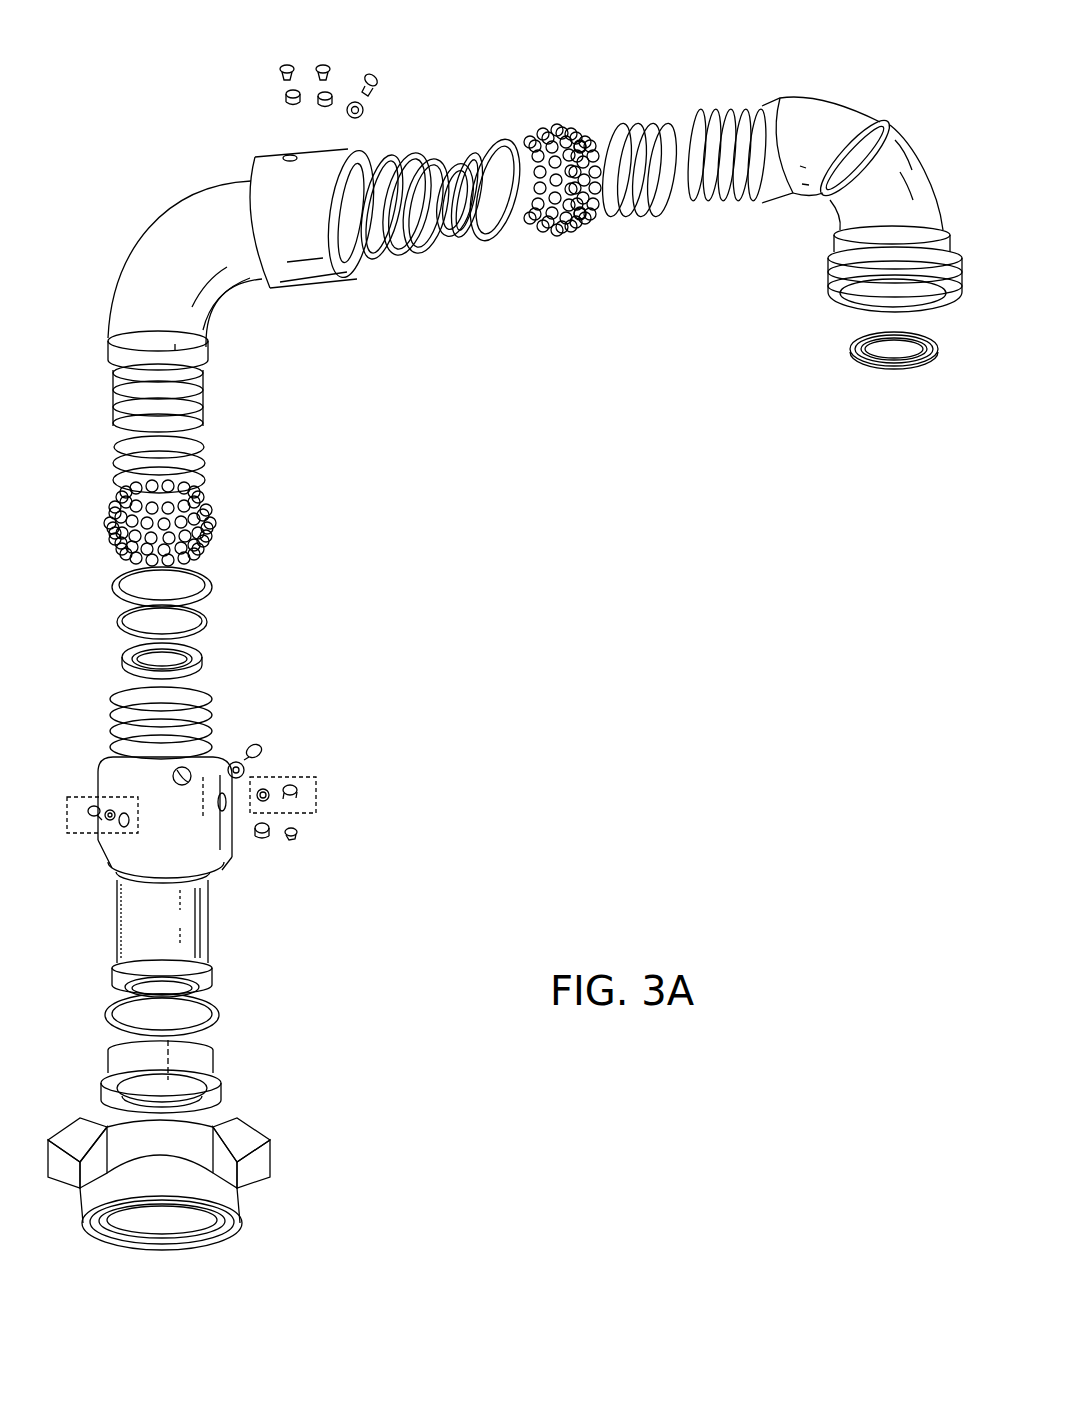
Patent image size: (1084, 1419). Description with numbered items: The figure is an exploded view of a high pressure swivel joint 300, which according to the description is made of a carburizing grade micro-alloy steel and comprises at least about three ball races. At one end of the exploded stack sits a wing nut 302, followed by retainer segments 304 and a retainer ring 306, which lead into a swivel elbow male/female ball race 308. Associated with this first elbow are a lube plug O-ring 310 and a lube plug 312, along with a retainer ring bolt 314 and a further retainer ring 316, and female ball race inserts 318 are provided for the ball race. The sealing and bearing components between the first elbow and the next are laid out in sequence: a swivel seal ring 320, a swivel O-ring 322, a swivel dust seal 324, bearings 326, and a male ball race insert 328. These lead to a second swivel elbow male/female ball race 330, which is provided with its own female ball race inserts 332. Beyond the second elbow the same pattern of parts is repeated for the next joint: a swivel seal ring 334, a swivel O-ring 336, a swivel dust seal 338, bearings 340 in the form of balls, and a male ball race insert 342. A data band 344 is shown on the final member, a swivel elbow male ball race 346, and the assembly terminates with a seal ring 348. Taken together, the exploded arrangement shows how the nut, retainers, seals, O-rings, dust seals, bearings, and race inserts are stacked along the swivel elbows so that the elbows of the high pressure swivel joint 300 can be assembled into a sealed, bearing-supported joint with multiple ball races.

The high pressure swivel joint 300 is at (557, 444).
The wing nut 302 is at (272, 1152).
The retainer segments 304 is at (218, 1065).
The retainer ring 306 is at (219, 1012).
The swivel elbow male/female ball race 308 is at (117, 937).
The lube plug O-ring 310 is at (105, 793).
The lube plug 312 is at (73, 838).
The retainer ring bolt 314 is at (300, 835).
The retainer ring 316 is at (265, 840).
The female ball race inserts 318 is at (233, 711).
The swivel seal ring 320 is at (204, 664).
The swivel O-ring 322 is at (212, 630).
The swivel dust seal 324 is at (214, 596).
The bearings 326 is at (225, 519).
The male ball race insert 328 is at (224, 467).
The swivel elbow male/female ball race 330 is at (327, 288).
The female ball race inserts 332 is at (413, 276).
The swivel seal ring 334 is at (442, 163).
The swivel O-ring 336 is at (477, 244).
The swivel dust seal 338 is at (487, 143).
The bearings 340 is at (563, 121).
The male ball race insert 342 is at (648, 110).
The data band 344 is at (872, 117).
The swivel elbow male ball race 346 is at (937, 178).
The seal ring 348 is at (893, 369).